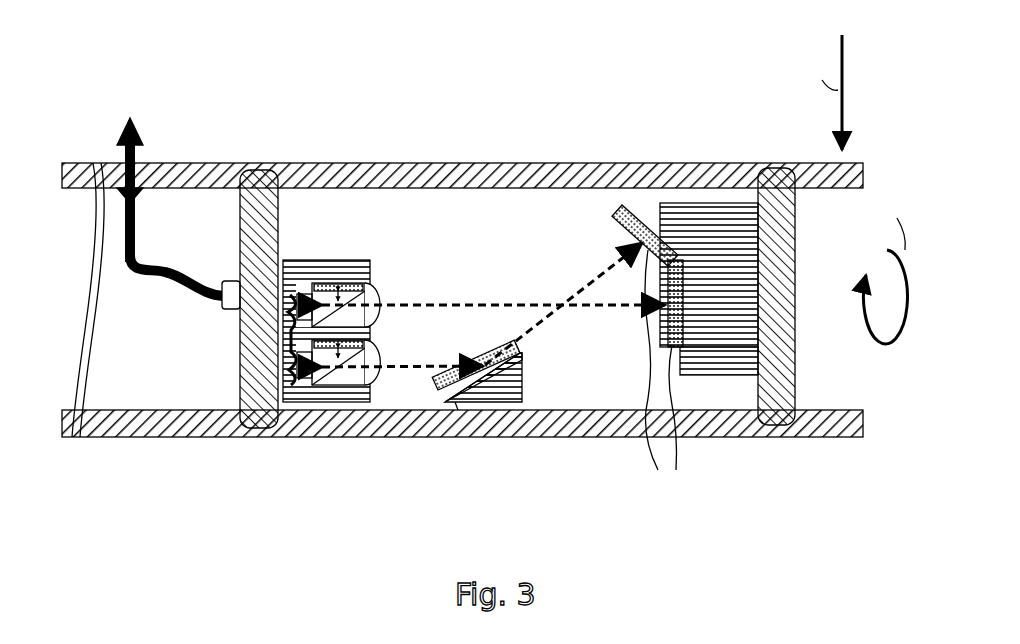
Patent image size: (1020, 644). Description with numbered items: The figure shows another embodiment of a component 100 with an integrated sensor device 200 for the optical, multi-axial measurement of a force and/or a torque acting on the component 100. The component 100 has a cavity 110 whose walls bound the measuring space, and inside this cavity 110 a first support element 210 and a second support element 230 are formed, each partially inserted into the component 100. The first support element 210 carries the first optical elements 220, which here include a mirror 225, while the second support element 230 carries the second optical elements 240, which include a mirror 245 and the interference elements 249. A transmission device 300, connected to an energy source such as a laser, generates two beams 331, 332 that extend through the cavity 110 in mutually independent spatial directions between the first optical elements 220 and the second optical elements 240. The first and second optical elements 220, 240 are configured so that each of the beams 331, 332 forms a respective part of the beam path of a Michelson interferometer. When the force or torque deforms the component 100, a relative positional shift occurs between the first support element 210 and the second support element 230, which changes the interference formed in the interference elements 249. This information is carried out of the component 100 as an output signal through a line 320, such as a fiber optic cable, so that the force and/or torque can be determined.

The component 100 is at (487, 296).
The cavity 110 is at (350, 233).
The line 320 is at (135, 226).
The sensor device 200 is at (517, 369).
The second support element 230 is at (262, 438).
The first support element 210 is at (765, 437).
The second optical elements 240 is at (402, 390).
The interference element 249 is at (370, 327).
The mirror of the second optical elements 245 is at (477, 410).
The first optical elements 220 is at (633, 342).
The mirror of the first optical elements 225 is at (680, 373).
The transmission device 300 is at (471, 210).
The first beam 331 is at (450, 298).
The second beam 332 is at (482, 240).